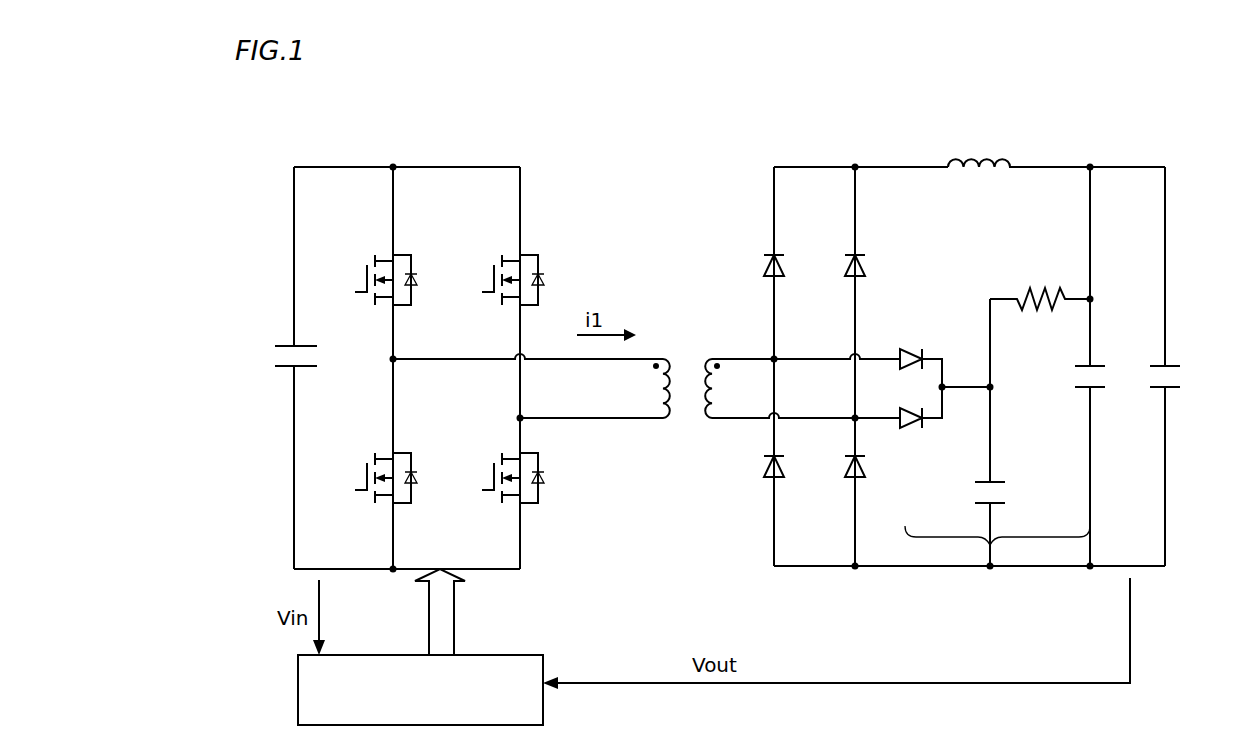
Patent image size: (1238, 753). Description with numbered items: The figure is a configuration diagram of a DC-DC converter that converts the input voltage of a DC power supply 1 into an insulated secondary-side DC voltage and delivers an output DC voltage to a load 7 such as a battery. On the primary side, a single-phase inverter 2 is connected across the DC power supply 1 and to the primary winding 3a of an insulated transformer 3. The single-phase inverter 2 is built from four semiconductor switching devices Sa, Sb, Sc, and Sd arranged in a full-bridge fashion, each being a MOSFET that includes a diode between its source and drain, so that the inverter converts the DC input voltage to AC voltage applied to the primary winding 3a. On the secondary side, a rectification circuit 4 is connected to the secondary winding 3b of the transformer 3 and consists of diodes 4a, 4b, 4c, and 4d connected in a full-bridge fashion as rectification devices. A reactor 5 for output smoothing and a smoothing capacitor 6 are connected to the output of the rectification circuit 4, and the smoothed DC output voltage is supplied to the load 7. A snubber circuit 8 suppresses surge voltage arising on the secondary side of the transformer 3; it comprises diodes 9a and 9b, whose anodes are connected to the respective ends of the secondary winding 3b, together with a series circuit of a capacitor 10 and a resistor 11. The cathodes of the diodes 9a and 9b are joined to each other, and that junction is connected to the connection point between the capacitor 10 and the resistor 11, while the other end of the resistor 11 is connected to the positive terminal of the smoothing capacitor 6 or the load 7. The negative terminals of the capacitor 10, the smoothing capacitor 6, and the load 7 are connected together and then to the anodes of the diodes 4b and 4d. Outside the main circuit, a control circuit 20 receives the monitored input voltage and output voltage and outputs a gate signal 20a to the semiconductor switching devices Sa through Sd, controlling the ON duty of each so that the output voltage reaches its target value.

The DC power supply 1 is at (275, 382).
The single-phase inverter 2 is at (451, 328).
The transformer 3 is at (624, 391).
The primary winding 3a is at (668, 431).
The secondary winding 3b is at (707, 431).
The rectification circuit 4 is at (942, 326).
The diode 4a is at (755, 250).
The diode 4b is at (760, 487).
The diode 4c is at (878, 262).
The diode 4d is at (848, 487).
The reactor 5 is at (963, 142).
The smoothing capacitor 6 is at (1100, 360).
The load 7 is at (1178, 400).
The snubber circuit 8 is at (974, 419).
The diode 9a is at (910, 348).
The diode 9b is at (912, 432).
The capacitor 10 is at (1000, 478).
The resistor 11 is at (1037, 282).
The control circuit 20 is at (535, 654).
The gate signal 20a is at (452, 616).
The semiconductor switching device Sa is at (374, 250).
The semiconductor switching device Sb is at (377, 447).
The semiconductor switching device Sc is at (532, 250).
The semiconductor switching device Sd is at (550, 455).